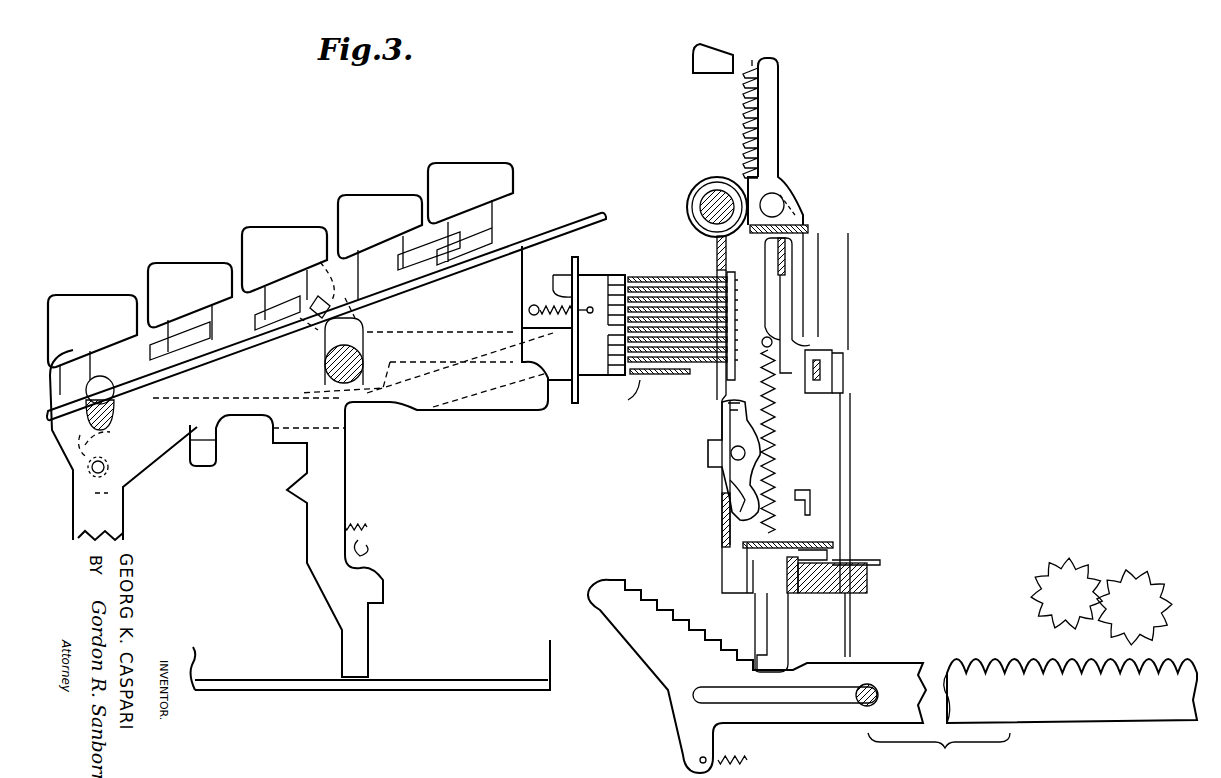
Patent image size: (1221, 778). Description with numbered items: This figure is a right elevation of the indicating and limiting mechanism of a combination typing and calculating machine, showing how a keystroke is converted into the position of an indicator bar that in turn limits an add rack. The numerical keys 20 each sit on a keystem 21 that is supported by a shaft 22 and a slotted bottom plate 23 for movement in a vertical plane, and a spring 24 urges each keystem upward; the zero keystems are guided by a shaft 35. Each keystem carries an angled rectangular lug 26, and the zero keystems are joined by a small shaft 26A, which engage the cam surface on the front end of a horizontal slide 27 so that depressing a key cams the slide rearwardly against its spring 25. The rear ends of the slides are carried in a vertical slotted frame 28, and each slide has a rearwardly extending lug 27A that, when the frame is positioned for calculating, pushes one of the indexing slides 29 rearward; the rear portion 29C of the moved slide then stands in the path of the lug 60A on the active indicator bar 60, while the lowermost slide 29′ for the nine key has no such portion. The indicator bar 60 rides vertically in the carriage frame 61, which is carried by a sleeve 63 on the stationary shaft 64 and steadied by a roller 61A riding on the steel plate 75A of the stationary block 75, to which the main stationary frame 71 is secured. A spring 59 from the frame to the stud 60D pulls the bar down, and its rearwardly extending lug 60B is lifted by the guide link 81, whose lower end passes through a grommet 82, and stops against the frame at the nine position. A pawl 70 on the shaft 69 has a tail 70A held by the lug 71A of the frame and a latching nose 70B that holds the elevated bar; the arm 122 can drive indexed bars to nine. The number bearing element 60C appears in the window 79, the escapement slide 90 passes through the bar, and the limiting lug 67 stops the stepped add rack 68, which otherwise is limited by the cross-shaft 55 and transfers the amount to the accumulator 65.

The numerical keys 20 is at (197, 273).
The keystem 21 is at (337, 465).
The shaft 22 is at (323, 365).
The slotted bottom plate 23 is at (470, 687).
The spring 24 is at (367, 528).
The spring 25 is at (543, 307).
The rectangular lug 26 is at (330, 283).
The small shaft 26A is at (108, 470).
The horizontal slide 27 is at (590, 277).
The rearwardly extending lug 27A is at (610, 333).
The vertical slotted frame 28 is at (578, 405).
The indexing slide 29 is at (657, 278).
The rearwardly extending portion 29C is at (717, 273).
The indexing slide 29′ is at (647, 377).
The shaft 35 is at (110, 430).
The stationary cross-shaft 55 is at (870, 688).
The spring 59 is at (780, 373).
The indicator bar 60 is at (770, 89).
The lug 60A is at (727, 377).
The rearwardly extending lug 60B is at (833, 355).
The plastic number bearing element 60C is at (752, 60).
The stud 60D is at (792, 340).
The carriage frame 61 is at (806, 232).
The roller 61A is at (835, 555).
The sleeve 63 is at (710, 190).
The stationary shaft 64 is at (706, 205).
The accumulator 65 is at (1100, 580).
The limiting lug 67 is at (757, 648).
The add rack 68 is at (648, 657).
The shaft 69 is at (731, 453).
The pawl 70 is at (733, 433).
The tail portion 70A is at (740, 490).
The latching nose 70B is at (727, 403).
The main stationary frame 71 is at (722, 560).
The lug 71A is at (722, 520).
The stationary block 75 is at (855, 590).
The vertical steel plate 75A is at (787, 575).
The indicating window 79 is at (712, 45).
The guide link 81 is at (845, 430).
The grommet 82 is at (868, 578).
The escapement slide 90 is at (783, 260).
The arm 122 is at (810, 498).